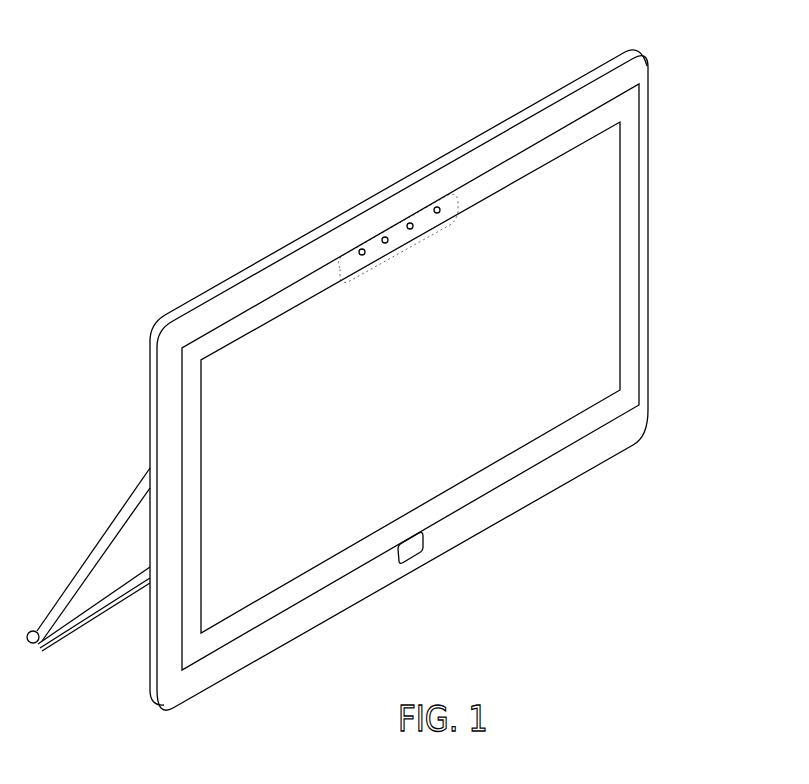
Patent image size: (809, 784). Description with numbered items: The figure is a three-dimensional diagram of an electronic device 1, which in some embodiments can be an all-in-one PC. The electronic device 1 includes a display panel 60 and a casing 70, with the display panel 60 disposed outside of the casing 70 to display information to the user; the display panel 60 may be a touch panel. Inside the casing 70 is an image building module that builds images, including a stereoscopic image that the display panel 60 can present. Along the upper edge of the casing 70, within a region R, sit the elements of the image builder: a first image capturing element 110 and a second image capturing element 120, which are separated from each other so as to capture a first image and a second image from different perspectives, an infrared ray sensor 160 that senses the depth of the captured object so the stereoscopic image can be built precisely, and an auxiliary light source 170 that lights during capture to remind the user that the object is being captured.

The electronic device 1 is at (222, 272).
The display panel 60 is at (600, 203).
The casing 70 is at (632, 73).
The first image capturing element 110 is at (361, 249).
The second image capturing element 120 is at (410, 223).
The infrared ray sensor 160 is at (438, 207).
The auxiliary light source 170 is at (384, 237).
The sensing region R is at (419, 195).